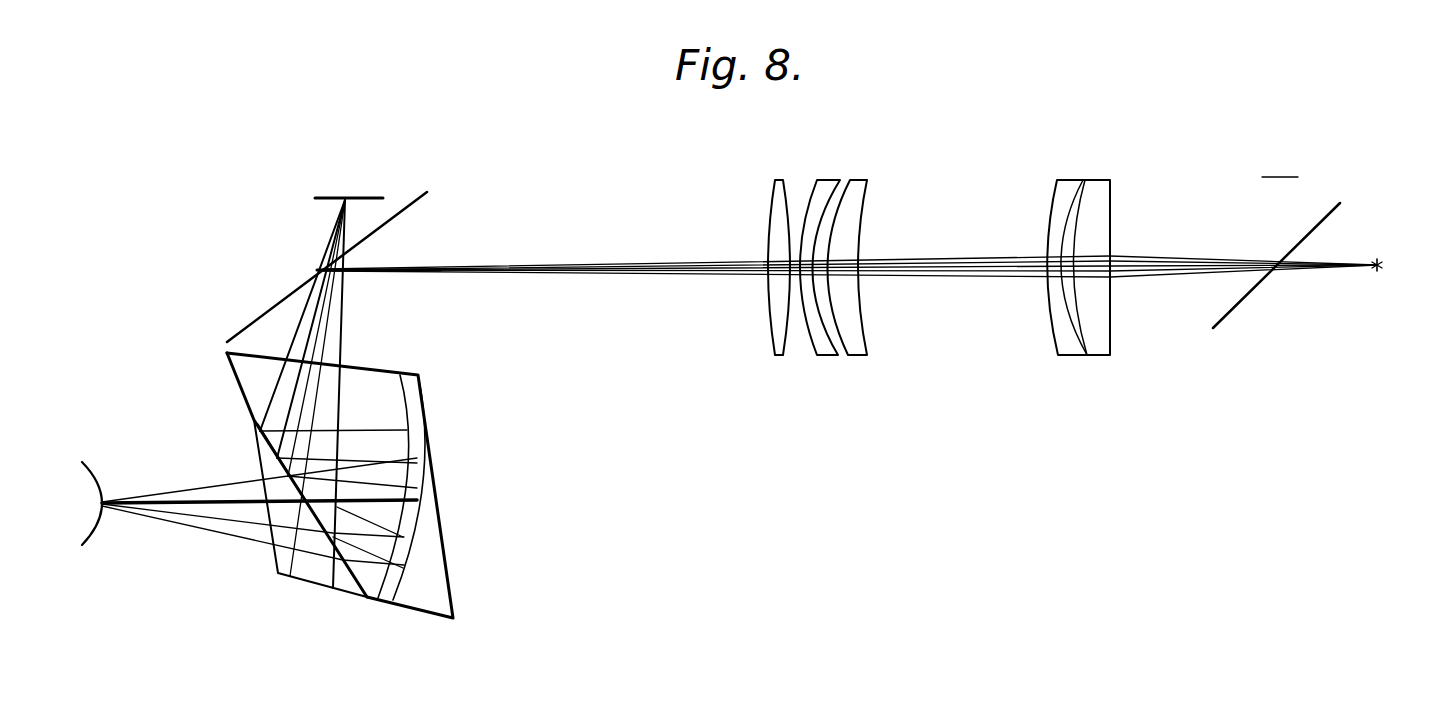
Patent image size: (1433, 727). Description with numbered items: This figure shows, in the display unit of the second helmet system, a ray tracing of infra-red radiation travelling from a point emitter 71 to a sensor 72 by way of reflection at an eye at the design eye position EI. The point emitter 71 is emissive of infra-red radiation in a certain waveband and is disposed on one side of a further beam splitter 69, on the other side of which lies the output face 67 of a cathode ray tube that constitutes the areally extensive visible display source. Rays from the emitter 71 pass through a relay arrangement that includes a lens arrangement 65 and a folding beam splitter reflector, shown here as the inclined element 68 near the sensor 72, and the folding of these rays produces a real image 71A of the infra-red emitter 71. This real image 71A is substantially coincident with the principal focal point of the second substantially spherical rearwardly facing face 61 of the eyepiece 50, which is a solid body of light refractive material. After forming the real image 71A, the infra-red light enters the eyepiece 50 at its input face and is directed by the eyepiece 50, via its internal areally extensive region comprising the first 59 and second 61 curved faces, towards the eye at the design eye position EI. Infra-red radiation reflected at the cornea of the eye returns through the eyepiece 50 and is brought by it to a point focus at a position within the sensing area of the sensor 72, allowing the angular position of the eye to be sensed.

The eyepiece 50 is at (380, 485).
The first substantially spherical rearwardly facing face 59 is at (407, 428).
The second substantially spherical rearwardly facing face 61 is at (418, 483).
The lens arrangement 65 is at (1113, 156).
The output face 67 is at (1298, 177).
The beam splitter mirror 68 is at (403, 198).
The further beam splitter 69 is at (1323, 227).
The point emitter 71 is at (1383, 260).
The real image 71A is at (310, 340).
The sensor 72 is at (333, 197).
The design eye position EI is at (230, 511).